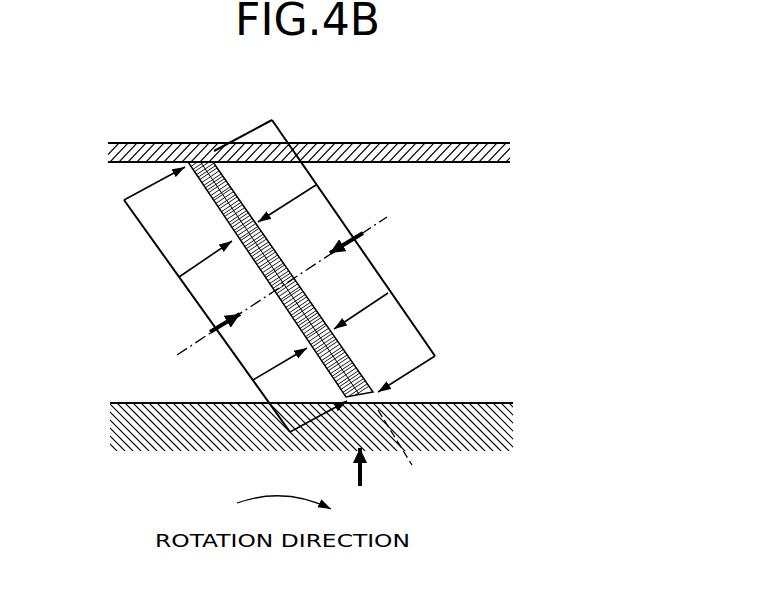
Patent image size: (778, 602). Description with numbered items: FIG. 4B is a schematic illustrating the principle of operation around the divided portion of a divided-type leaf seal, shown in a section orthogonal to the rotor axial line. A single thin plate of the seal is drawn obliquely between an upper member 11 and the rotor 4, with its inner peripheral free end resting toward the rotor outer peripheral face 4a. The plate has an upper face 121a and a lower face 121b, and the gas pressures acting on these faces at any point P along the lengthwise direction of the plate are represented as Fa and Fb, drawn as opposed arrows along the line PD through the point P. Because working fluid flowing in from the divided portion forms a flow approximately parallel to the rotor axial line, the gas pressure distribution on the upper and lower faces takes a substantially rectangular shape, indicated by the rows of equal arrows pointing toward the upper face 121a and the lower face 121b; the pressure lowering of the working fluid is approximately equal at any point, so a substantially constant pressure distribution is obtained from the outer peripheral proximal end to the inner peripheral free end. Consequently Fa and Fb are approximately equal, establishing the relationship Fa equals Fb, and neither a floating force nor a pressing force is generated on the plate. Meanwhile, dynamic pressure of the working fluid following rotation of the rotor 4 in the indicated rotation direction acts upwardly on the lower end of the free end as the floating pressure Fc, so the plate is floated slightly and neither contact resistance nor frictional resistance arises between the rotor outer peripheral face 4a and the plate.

The cleaning blade holder / upper member 11 is at (443, 139).
The rotor 4 is at (480, 444).
The rotor outer peripheral face 4a is at (472, 402).
The upper face 121a is at (135, 203).
The lower face 121b is at (135, 203).
The point P is at (282, 283).
The pressing direction PD is at (412, 322).
The gas pressure on upper face Fa is at (365, 235).
The gas pressure on lower face Fb is at (210, 331).
The floating pressure Fc is at (362, 460).